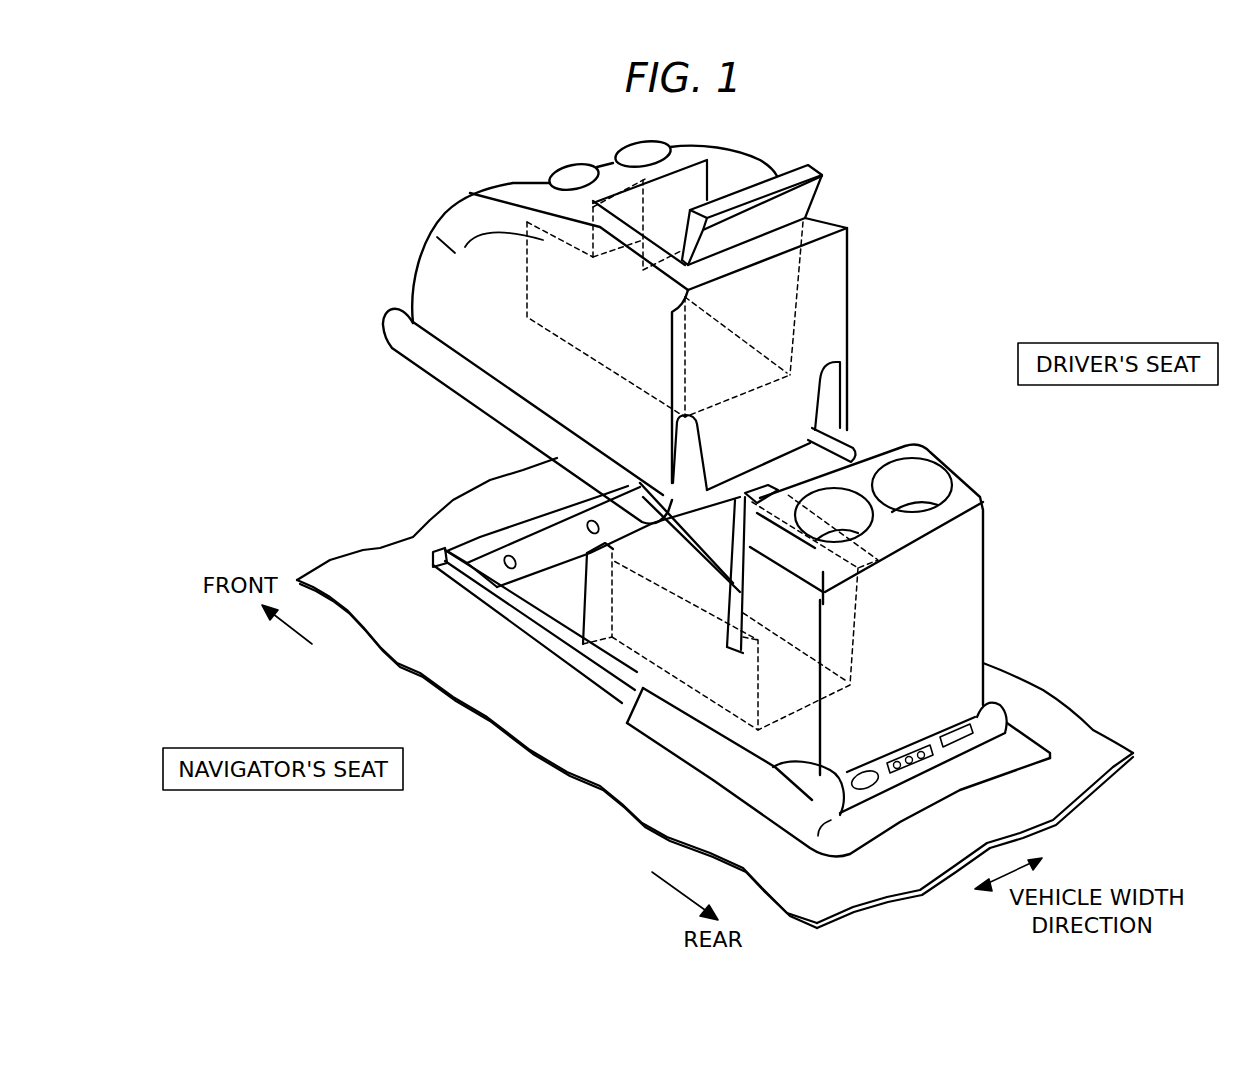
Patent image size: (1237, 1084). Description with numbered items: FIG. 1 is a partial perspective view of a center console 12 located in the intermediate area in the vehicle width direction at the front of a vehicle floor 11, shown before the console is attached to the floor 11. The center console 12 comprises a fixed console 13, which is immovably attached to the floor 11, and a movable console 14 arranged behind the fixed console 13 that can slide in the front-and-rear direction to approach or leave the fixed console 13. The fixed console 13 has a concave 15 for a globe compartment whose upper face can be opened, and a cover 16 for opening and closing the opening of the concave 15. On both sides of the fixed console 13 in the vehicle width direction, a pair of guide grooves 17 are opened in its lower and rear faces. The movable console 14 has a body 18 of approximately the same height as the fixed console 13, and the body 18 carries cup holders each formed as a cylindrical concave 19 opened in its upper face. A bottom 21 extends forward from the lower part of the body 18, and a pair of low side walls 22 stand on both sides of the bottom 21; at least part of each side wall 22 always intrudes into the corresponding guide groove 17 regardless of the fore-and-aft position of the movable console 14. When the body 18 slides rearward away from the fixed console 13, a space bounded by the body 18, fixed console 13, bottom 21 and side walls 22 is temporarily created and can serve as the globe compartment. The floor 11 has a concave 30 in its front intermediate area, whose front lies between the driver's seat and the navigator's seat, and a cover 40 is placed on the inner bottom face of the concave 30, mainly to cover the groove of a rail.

The floor 11 is at (370, 560).
The center console 12 is at (926, 350).
The fixed console 13 is at (415, 372).
The movable console 14 is at (990, 637).
The concave 15 is at (720, 178).
The cover 16 is at (800, 204).
The guide grooves 17 is at (700, 444).
The body 18 is at (975, 549).
The cylindrical concave 19 is at (850, 498).
The bottom 21 is at (848, 686).
The side walls 22 is at (766, 490).
The concave 30 is at (420, 566).
The cover 40 is at (1040, 746).